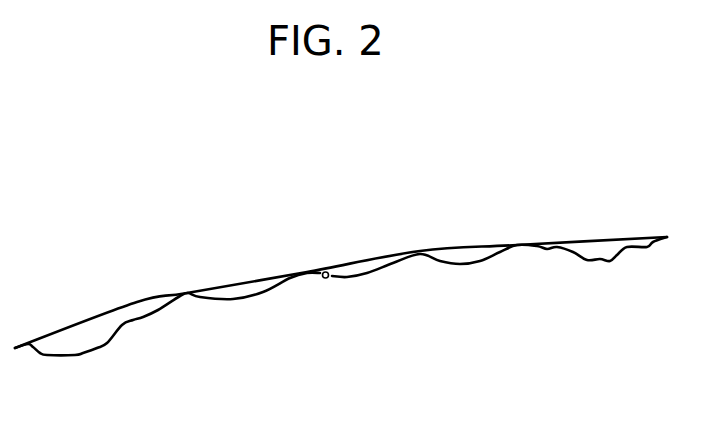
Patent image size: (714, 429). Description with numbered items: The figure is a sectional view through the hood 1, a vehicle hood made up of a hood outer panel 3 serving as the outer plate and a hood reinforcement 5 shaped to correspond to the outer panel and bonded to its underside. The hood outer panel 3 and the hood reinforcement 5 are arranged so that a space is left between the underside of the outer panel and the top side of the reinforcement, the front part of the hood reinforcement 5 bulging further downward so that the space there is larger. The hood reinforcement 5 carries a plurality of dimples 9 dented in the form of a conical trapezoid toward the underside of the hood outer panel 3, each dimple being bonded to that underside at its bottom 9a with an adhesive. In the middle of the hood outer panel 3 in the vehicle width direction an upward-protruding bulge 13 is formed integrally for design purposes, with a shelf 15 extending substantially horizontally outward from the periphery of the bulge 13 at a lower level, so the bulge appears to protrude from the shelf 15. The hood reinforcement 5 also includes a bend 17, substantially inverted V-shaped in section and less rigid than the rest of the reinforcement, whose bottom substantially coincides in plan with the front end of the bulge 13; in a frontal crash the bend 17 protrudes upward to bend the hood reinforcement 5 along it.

The hood 1 is at (341, 214).
The hood outer panel 3 is at (138, 318).
The hood reinforcement 5 is at (139, 322).
The dimples 9 is at (193, 291).
The bottom 9a is at (187, 292).
The bulge 13 is at (375, 255).
The shelf 15 is at (306, 268).
The bend 17 is at (330, 272).